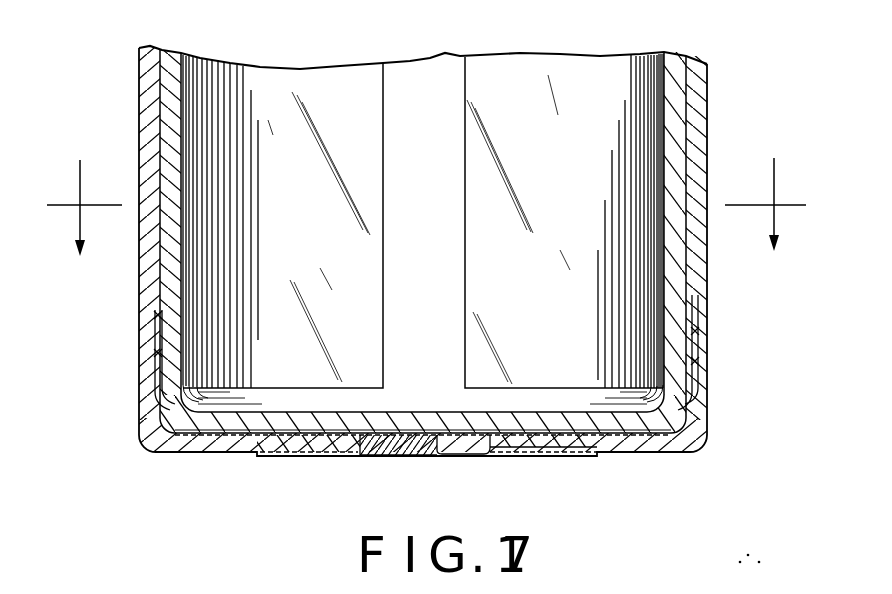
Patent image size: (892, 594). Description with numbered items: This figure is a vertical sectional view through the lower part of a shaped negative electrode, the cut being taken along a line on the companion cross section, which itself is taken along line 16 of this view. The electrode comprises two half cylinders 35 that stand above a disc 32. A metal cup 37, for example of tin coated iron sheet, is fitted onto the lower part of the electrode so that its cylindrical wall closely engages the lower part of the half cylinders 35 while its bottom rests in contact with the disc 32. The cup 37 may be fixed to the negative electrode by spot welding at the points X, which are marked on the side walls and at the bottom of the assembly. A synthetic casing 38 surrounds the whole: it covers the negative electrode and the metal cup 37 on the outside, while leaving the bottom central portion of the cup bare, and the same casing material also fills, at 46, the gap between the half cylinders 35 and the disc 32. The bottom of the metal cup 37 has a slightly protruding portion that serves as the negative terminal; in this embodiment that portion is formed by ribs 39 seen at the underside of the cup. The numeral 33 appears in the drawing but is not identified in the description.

The section line 16— 16 is at (426, 230).
The disc 32 is at (303, 423).
The outer shell 33 is at (178, 406).
The half cylinders 35 is at (207, 133).
The metal cup 37 is at (697, 358).
The synthetic casing 38 is at (430, 78).
The ribs 39 is at (333, 455).
The gap between half cylinders and disc 46 is at (680, 418).
The spot-welding points X is at (160, 357).